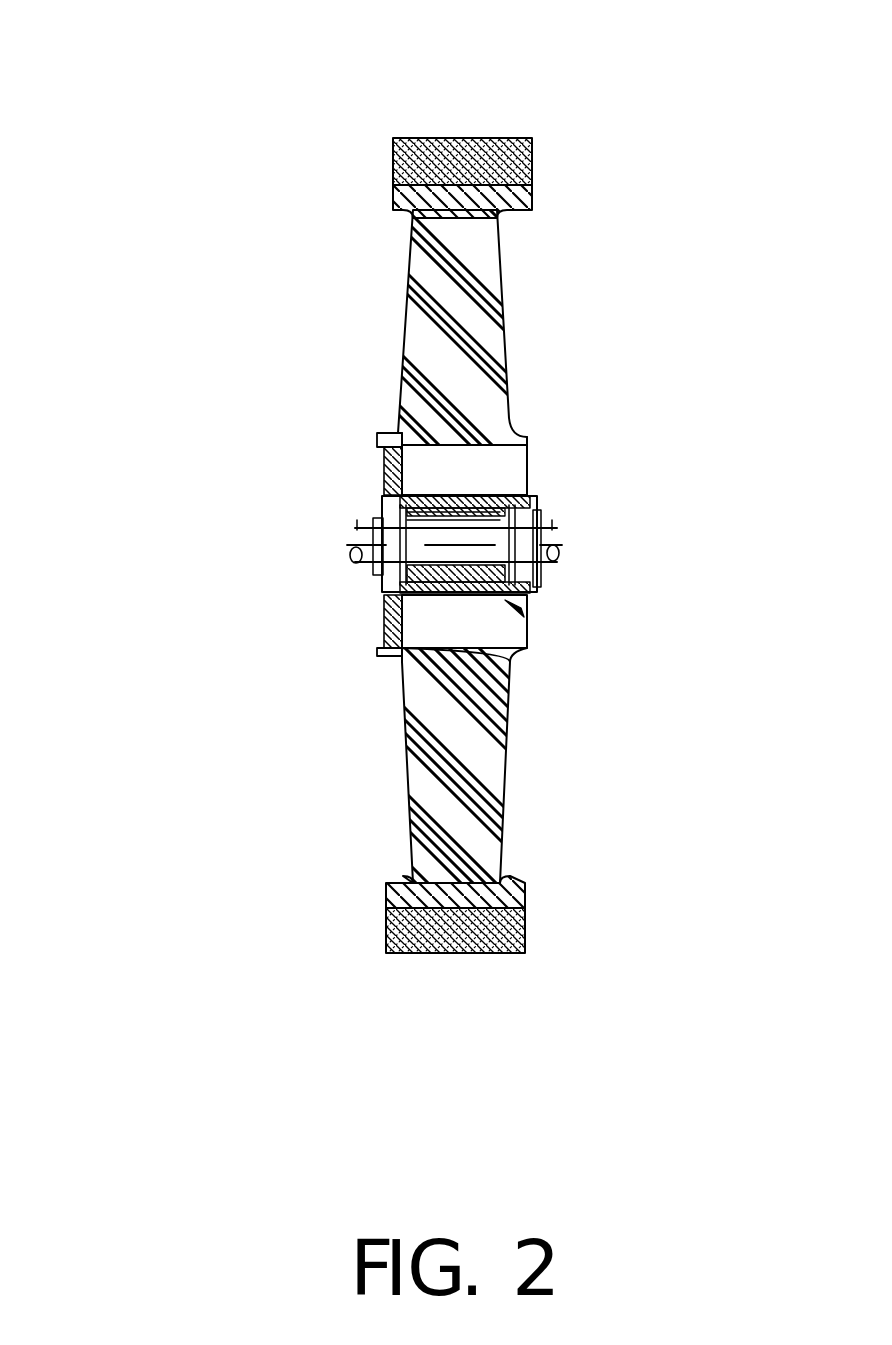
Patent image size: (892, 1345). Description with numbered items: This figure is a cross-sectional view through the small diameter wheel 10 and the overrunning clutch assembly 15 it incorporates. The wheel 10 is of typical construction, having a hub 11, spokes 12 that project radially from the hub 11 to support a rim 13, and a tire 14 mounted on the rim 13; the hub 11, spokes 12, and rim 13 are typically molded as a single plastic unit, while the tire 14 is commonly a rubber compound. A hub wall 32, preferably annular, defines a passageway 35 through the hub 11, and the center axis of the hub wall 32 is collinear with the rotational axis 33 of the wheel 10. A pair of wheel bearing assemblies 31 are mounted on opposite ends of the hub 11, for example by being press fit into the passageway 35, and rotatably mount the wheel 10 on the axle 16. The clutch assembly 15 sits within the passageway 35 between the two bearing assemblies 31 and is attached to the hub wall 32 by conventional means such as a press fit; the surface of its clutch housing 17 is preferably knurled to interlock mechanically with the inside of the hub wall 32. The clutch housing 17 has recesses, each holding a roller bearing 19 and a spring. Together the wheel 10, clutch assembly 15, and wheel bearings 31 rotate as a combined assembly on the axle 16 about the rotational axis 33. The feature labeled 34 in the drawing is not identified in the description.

The small diameter wheel 10 is at (285, 195).
The hub 11 is at (389, 468).
The spokes 12 is at (412, 318).
The rim 13 is at (532, 198).
The tire 14 is at (455, 138).
The overrunning clutch assembly 15 is at (528, 598).
The axle 16 is at (540, 578).
The clutch housing 17 is at (538, 513).
The roller bearing 19 is at (398, 512).
The wheel bearing assemblies 31 is at (377, 580).
The hub wall 32 is at (476, 494).
The rotational axis 33 is at (567, 550).
The bore 34 is at (528, 438).
The passageway 35 is at (380, 530).